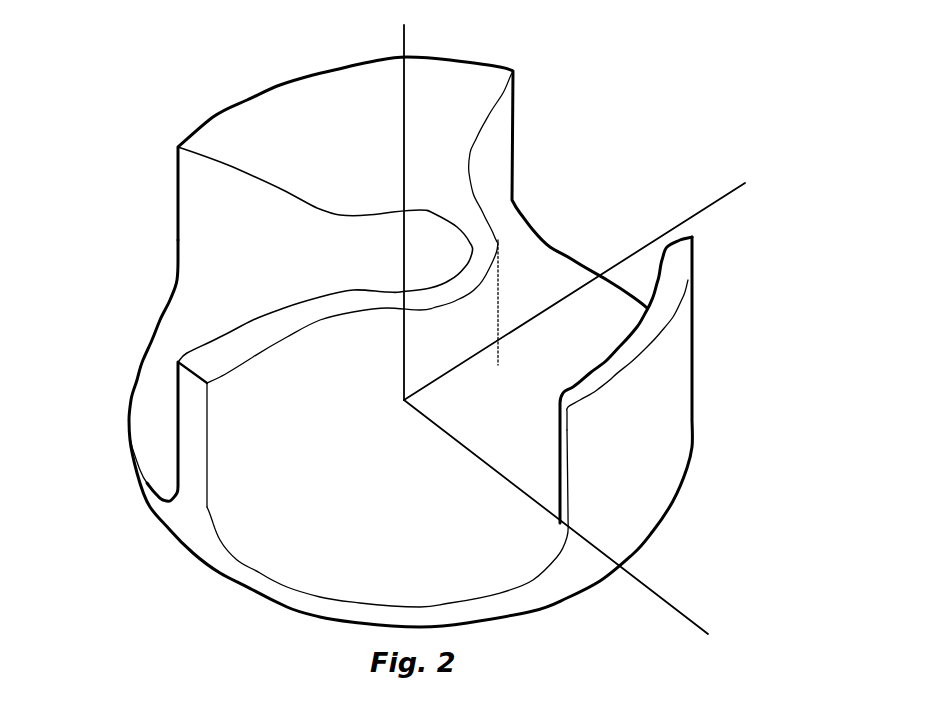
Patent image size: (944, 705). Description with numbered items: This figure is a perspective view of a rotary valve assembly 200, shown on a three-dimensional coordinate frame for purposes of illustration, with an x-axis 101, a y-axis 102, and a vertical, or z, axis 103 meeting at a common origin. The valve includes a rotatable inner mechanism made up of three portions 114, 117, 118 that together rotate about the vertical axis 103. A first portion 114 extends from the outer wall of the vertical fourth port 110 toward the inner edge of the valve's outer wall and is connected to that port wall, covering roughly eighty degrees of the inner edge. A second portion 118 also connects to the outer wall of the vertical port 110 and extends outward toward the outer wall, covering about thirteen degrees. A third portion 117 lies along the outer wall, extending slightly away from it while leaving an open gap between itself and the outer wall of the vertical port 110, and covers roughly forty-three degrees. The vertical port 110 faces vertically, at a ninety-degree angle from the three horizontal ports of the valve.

The cup-shaped housing assembly 200 is at (737, 121).
The x-axis 101 is at (652, 590).
The y-axis 102 is at (736, 184).
The vertical axis 103 is at (405, 38).
The fourth port 110 is at (497, 240).
The first portion 114 is at (178, 147).
The third portion 117 is at (680, 306).
The second portion 118 is at (178, 360).